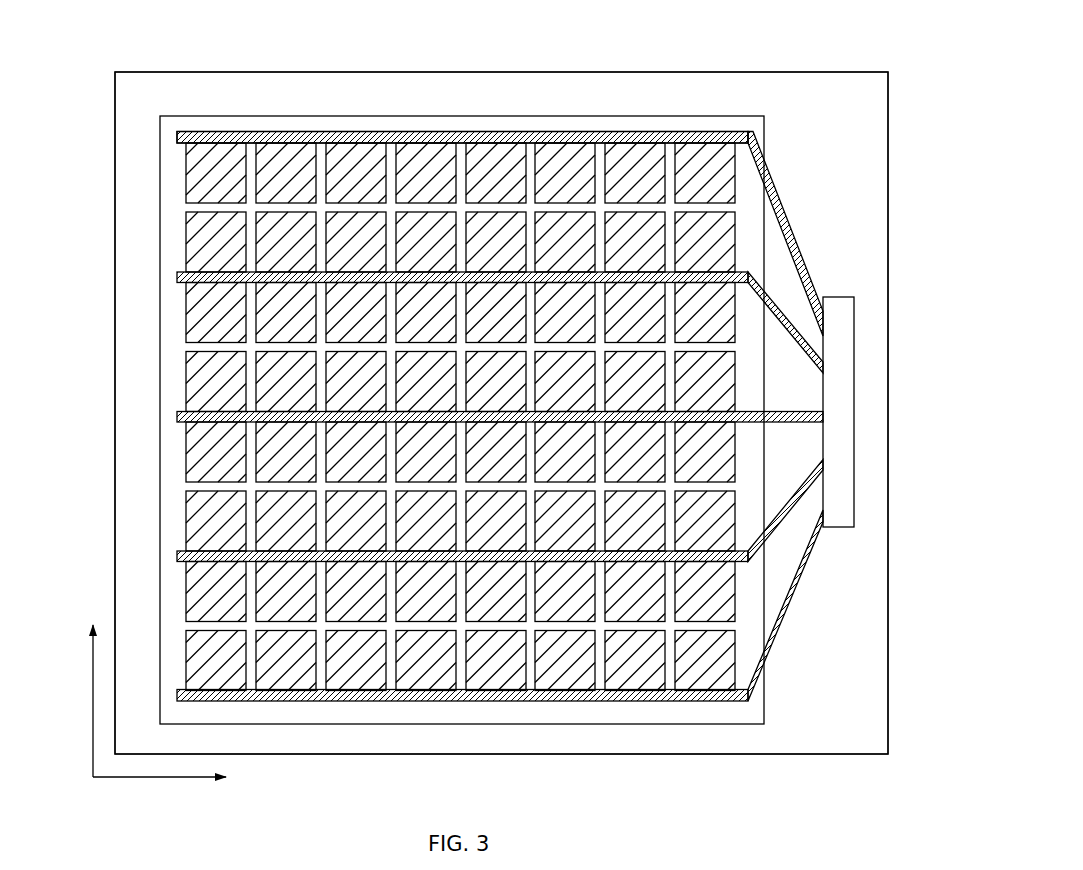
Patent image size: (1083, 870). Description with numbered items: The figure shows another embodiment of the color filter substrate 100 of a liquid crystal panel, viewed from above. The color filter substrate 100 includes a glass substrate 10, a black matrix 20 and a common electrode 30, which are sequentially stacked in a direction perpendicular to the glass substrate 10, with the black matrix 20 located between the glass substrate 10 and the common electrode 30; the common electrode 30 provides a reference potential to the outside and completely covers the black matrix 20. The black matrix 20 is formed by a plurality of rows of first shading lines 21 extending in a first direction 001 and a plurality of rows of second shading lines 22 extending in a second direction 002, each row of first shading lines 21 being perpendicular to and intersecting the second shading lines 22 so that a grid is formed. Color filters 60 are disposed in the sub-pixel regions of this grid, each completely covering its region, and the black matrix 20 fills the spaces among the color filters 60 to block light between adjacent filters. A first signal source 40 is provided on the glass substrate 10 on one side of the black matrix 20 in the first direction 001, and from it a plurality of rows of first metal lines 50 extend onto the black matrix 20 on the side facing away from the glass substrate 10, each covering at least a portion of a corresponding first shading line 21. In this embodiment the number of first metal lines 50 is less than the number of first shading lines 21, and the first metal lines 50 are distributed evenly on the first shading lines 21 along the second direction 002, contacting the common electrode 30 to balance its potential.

The color filter substrate 100 is at (156, 36).
The glass substrate 10 is at (680, 92).
The black matrix 20 is at (520, 132).
The first shading line 21 is at (728, 207).
The second shading line 22 is at (738, 657).
The common electrode 30 is at (613, 712).
The first signal source 40 is at (833, 335).
The first metal line 50 is at (253, 137).
The color filter 60 is at (340, 172).
The first direction 001 is at (190, 776).
The second direction 002 is at (92, 684).